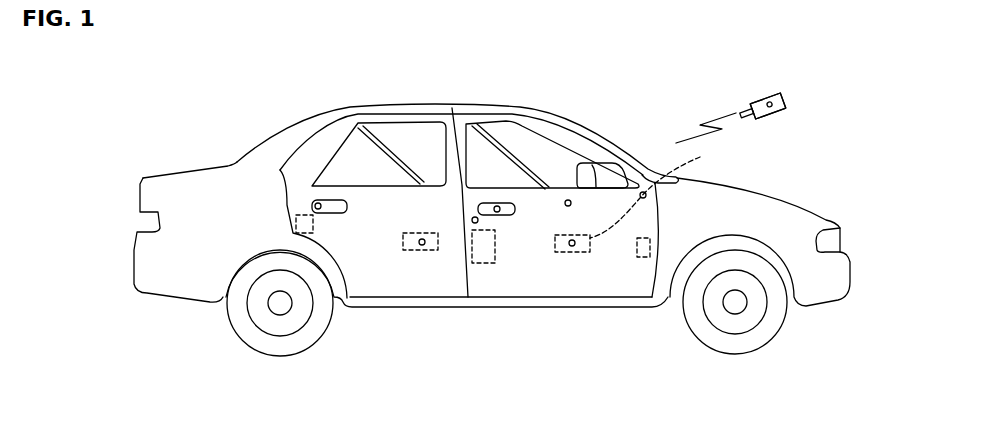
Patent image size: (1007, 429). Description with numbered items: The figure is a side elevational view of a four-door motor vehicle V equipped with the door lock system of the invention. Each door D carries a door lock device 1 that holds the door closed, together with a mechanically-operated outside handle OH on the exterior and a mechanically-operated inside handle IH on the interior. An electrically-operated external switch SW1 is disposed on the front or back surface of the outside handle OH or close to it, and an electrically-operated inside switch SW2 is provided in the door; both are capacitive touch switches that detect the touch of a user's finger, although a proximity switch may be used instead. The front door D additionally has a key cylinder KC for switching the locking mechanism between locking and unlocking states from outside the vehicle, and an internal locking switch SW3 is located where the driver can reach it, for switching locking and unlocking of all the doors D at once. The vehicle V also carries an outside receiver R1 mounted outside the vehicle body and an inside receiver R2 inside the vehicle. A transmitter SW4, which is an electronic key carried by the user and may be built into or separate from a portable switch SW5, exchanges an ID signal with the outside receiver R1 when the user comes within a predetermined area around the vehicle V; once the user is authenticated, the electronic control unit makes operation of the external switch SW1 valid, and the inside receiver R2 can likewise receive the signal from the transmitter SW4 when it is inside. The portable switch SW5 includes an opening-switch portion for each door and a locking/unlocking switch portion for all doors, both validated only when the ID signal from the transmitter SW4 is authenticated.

The motor vehicle V is at (600, 116).
The door D is at (393, 273).
The door lock device 1 is at (320, 230).
The outside handle OH is at (333, 200).
The inside handle IH is at (430, 233).
The key cylinder KC is at (475, 217).
The external switch SW1 is at (314, 205).
The inside switch SW2 is at (425, 250).
The internal locking switch SW3 is at (643, 258).
The transmitter SW4 is at (767, 116).
The portable switch SW5 is at (768, 106).
The outside receiver R1 is at (657, 191).
The inside receiver R2 is at (569, 200).